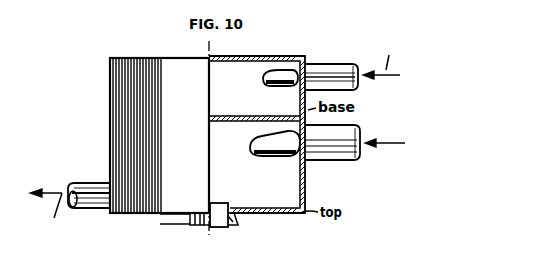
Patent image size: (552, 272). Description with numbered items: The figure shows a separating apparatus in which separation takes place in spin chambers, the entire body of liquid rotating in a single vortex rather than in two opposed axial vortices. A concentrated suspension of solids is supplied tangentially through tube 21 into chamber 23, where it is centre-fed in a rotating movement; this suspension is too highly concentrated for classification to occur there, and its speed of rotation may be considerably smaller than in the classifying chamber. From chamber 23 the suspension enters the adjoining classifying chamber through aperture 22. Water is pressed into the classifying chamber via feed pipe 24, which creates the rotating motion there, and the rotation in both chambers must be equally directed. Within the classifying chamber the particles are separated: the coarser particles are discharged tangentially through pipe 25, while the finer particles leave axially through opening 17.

The opening 17 is at (230, 218).
The tube 21 is at (346, 64).
The aperture 22 is at (254, 131).
The chamber 23 is at (110, 100).
The feed pipe 24 is at (399, 155).
The pipe 25 is at (83, 212).